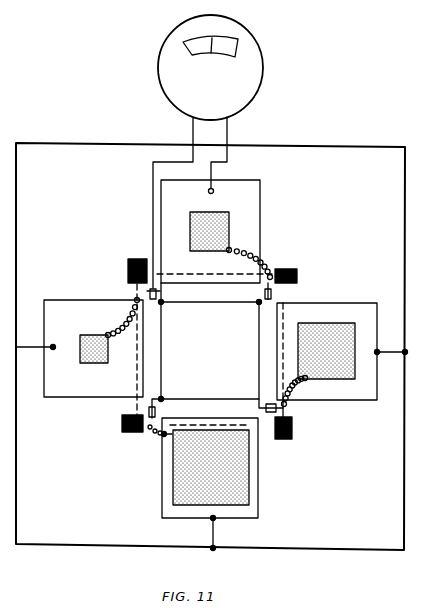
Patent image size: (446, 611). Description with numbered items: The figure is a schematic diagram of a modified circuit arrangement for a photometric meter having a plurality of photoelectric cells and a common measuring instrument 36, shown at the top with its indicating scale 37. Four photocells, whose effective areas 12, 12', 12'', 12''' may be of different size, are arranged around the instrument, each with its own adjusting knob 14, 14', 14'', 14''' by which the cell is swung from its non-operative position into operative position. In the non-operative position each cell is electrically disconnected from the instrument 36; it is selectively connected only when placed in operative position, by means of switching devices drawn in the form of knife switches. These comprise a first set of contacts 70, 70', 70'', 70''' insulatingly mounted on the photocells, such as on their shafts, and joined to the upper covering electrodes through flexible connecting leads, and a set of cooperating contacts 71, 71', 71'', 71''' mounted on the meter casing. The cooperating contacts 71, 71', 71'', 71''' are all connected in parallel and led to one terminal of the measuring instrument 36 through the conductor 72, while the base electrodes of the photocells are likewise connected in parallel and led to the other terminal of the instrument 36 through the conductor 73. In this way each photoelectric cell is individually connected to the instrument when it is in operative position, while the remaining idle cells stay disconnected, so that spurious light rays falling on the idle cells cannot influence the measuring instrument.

The measuring instrument 36 is at (192, 22).
The meter indicator window 37 is at (215, 47).
The conductor 72 is at (192, 128).
The conductor 73 is at (229, 129).
The photoelectric cell 12 is at (236, 229).
The photoelectric cell 12' is at (229, 467).
The photoelectric cell 12'' is at (84, 375).
The photoelectric cell 12''' is at (326, 331).
The knurled knob 14 is at (297, 268).
The knurled knob 14' is at (122, 439).
The knurled knob 14'' is at (120, 261).
The knurled knob 14''' is at (299, 422).
The contact 70 is at (261, 259).
The contact 70' is at (152, 444).
The contact 70'' is at (114, 309).
The contact 70''' is at (301, 401).
The cooperating contact 71 is at (247, 291).
The cooperating contact 71' is at (167, 408).
The cooperating contact 71'' is at (153, 304).
The cooperating contact 71''' is at (250, 407).